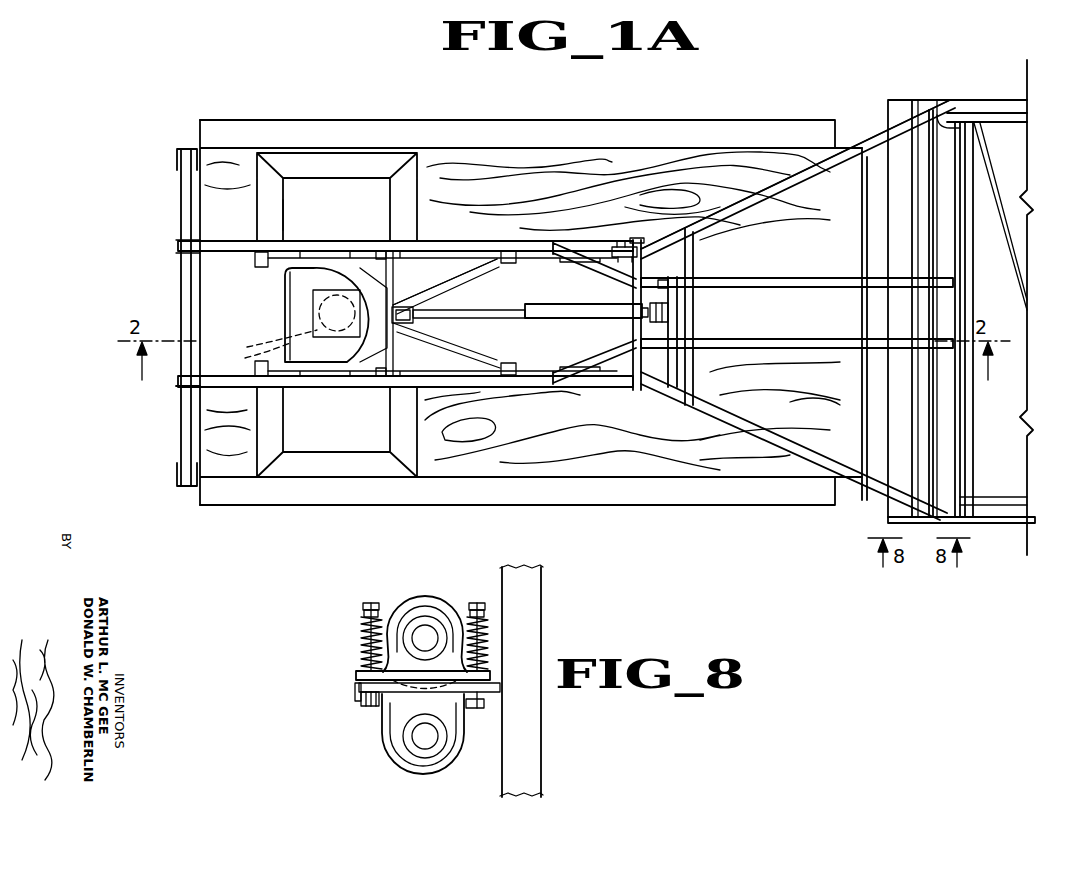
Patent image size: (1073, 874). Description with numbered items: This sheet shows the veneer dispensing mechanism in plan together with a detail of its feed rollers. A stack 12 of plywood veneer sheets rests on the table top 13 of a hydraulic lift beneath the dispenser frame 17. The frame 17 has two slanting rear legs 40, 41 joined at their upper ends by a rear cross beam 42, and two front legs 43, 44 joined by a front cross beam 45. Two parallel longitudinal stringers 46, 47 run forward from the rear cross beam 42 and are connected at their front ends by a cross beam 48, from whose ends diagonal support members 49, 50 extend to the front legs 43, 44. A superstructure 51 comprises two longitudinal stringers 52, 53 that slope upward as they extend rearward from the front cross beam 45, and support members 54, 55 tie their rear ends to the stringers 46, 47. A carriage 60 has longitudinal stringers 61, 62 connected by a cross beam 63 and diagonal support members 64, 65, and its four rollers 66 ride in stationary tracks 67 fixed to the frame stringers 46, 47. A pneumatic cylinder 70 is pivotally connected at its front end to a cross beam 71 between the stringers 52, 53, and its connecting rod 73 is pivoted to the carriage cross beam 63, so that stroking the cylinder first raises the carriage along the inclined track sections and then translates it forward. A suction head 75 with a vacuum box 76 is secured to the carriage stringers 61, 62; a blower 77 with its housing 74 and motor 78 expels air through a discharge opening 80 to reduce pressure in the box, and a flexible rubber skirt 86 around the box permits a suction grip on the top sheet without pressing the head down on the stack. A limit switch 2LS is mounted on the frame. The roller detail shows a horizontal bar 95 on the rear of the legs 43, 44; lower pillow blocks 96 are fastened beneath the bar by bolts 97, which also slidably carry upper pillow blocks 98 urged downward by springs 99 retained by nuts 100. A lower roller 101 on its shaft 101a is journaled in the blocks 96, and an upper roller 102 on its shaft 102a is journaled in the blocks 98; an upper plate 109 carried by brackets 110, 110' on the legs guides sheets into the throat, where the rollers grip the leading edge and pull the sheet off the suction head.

In FIG. 1A, the stack of plywood veneer sheets 12 is at (548, 146).
In FIG. 1A, the table top 13 is at (667, 502).
In FIG. 1A, the dispenser frame 17 is at (870, 123).
In FIG. 1A, the rear leg 40 is at (180, 432).
In FIG. 1A, the rear leg 41 is at (180, 192).
In FIG. 1A, the rear cross beam 42 is at (180, 267).
In FIG. 1A, the front leg 43 is at (947, 493).
In FIG. 8, the front leg 43 is at (543, 757).
In FIG. 1A, the front leg 44 is at (948, 126).
In FIG. 1A, the front cross beam 45 is at (957, 422).
In FIG. 1A, the longitudinal stringer 46 is at (333, 246).
In FIG. 1A, the longitudinal stringer 47 is at (534, 382).
In FIG. 1A, the cross beam 48 is at (642, 368).
In FIG. 1A, the diagonal support member 49 is at (805, 167).
In FIG. 1A, the diagonal support member 50 is at (713, 410).
In FIG. 1A, the superstructure 51 is at (788, 266).
In FIG. 1A, the longitudinal stringer 52 is at (810, 284).
In FIG. 1A, the longitudinal stringer 53 is at (812, 338).
In FIG. 1A, the support member 54 is at (597, 268).
In FIG. 1A, the support member 55 is at (600, 358).
In FIG. 1A, the carriage 60 is at (452, 272).
In FIG. 1A, the carriage stringer 61 is at (380, 256).
In FIG. 1A, the carriage stringer 62 is at (373, 372).
In FIG. 1A, the cross beam 63 is at (430, 325).
In FIG. 1A, the diagonal support member 64 is at (467, 280).
In FIG. 1A, the diagonal support member 65 is at (463, 343).
In FIG. 1A, the roller 66 is at (268, 248).
In FIG. 1A, the stationary track 67 is at (308, 258).
In FIG. 1A, the pneumatic cylinder 70 is at (586, 310).
In FIG. 1A, the cross beam 71 is at (673, 312).
In FIG. 1A, the connecting rod 73 is at (469, 311).
In FIG. 1A, the blower housing 74 is at (300, 307).
In FIG. 1A, the suction head 75 is at (392, 148).
In FIG. 1A, the vacuum housing 76 is at (385, 195).
In FIG. 1A, the blower 77 is at (300, 288).
In FIG. 1A, the motor 78 is at (268, 342).
In FIG. 1A, the discharge opening 80 is at (252, 358).
In FIG. 1A, the flexible skirt 86 is at (305, 157).
In FIG. 8, the horizontal bar 95 is at (356, 688).
In FIG. 8, the pillow block 96 is at (395, 728).
In FIG. 8, the bolt 97 is at (360, 703).
In FIG. 8, the pillow block 98 is at (430, 614).
In FIG. 8, the spring 99 is at (360, 632).
In FIG. 8, the nut 100 is at (362, 610).
In FIG. 8, the lower roller 101 is at (380, 750).
In FIG. 8, the shaft 101a is at (432, 742).
In FIG. 1A, the upper roller 102 is at (933, 170).
In FIG. 8, the upper roller 102 is at (408, 597).
In FIG. 8, the shaft 102a is at (430, 640).
In FIG. 1A, the upper plate 109 is at (893, 180).
In FIG. 1A, the stop 110 is at (972, 307).
In FIG. 1A, the bracket 110' is at (926, 521).
In FIG. 1A, the limit switch 2LS is at (637, 255).